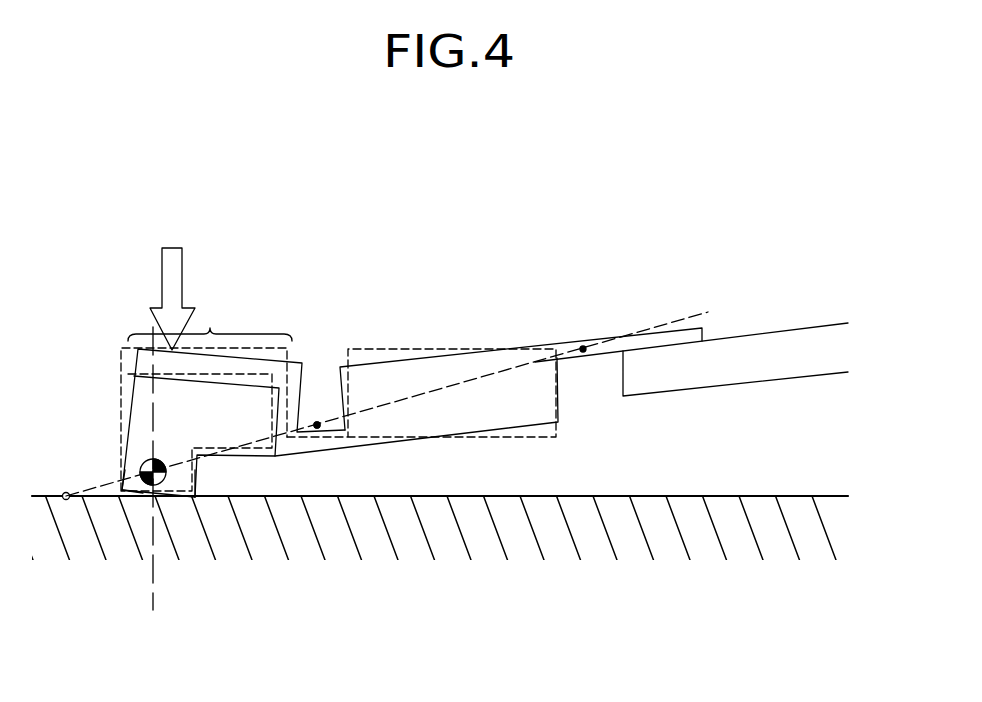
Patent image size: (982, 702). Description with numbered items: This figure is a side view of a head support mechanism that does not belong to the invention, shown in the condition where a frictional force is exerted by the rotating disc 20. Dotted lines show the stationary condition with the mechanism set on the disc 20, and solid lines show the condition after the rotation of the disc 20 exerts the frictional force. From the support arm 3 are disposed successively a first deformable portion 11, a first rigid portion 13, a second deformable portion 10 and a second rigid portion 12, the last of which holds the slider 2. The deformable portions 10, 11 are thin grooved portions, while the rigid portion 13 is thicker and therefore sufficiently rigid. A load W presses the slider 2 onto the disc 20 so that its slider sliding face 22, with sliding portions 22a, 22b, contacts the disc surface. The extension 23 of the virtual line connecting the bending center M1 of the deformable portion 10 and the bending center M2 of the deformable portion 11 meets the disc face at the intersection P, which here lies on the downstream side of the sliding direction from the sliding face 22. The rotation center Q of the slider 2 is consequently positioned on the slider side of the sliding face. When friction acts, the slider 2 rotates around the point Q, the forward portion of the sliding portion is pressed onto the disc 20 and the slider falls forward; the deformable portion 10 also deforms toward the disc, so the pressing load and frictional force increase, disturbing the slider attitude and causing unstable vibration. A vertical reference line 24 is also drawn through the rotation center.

The slider 2 is at (143, 403).
The support arm 3 is at (760, 343).
The second deformable portion 10 is at (305, 423).
The first deformable portion 11 is at (573, 340).
The second rigid portion 12 is at (210, 315).
The first rigid portion 13 is at (423, 367).
The disc 20 is at (662, 543).
The slider sliding face 22 is at (140, 495).
The sliding portion 22a is at (117, 483).
The sliding portion 22b is at (195, 492).
The extension 23 is at (465, 387).
The vertical reference line 24 is at (147, 327).
The load W is at (172, 278).
The intersection P is at (64, 478).
The rotation center Q is at (163, 486).
The bending center M1 is at (317, 425).
The bending center M2 is at (583, 348).